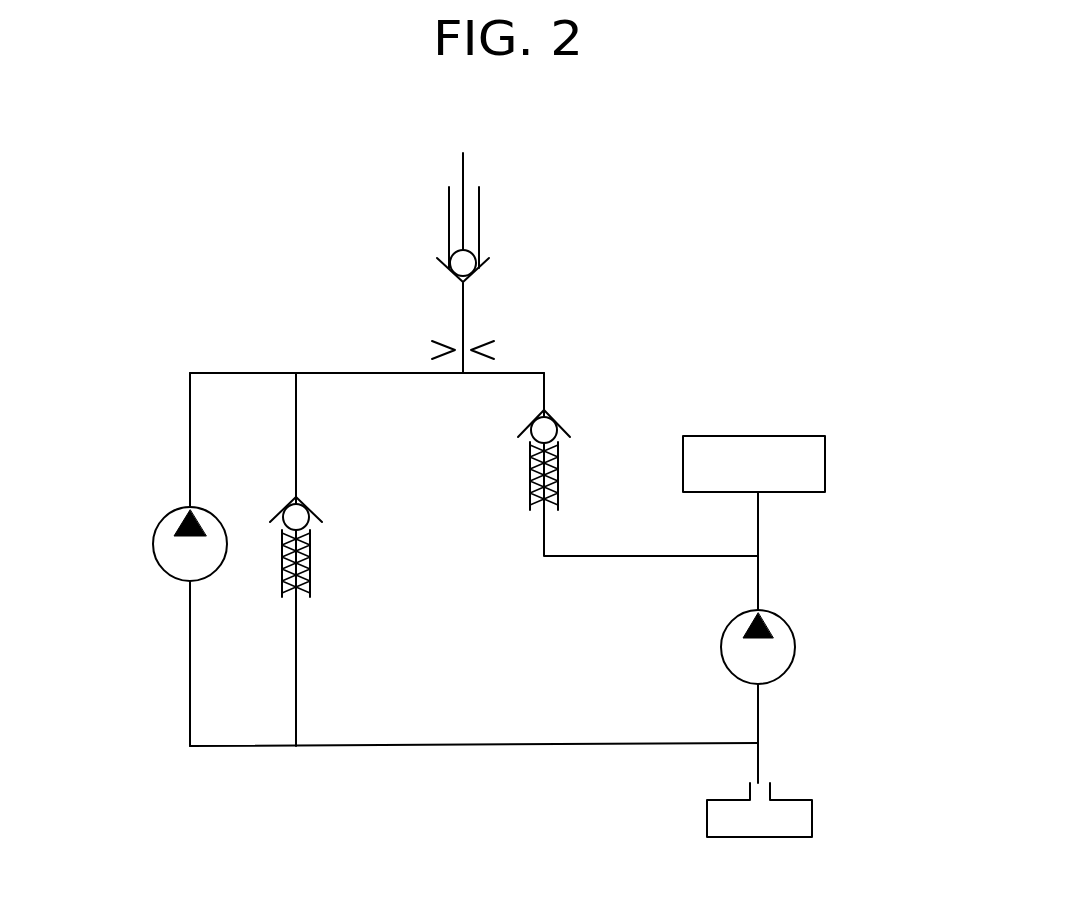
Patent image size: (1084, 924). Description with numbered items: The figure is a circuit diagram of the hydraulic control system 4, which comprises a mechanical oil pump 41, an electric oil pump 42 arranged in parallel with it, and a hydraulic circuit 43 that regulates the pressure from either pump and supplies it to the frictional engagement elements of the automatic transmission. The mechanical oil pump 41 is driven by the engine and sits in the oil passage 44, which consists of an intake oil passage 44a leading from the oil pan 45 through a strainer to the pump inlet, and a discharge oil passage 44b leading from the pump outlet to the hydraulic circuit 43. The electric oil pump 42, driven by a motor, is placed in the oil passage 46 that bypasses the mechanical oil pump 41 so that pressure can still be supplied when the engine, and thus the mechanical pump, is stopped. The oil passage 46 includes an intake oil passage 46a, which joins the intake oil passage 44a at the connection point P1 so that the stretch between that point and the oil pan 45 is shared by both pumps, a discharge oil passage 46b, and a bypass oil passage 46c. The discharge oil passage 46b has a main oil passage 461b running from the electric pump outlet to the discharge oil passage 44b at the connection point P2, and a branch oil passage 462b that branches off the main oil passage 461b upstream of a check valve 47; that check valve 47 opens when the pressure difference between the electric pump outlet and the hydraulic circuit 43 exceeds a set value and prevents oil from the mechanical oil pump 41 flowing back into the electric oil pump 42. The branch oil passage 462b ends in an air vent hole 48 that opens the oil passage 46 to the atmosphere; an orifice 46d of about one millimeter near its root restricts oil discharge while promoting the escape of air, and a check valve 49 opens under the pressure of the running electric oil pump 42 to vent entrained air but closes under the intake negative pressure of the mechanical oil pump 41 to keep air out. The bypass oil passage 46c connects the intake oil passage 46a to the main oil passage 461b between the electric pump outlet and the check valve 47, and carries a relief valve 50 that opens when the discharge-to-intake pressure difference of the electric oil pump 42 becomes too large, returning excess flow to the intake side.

The hydraulic control system 4 is at (660, 327).
The mechanical oil pump 41 is at (796, 640).
The electric oil pump 42 is at (160, 517).
The hydraulic circuit 43 is at (796, 435).
The oil passage 44 is at (814, 637).
The intake oil passage 44a is at (760, 705).
The discharge oil passage 44b is at (760, 514).
The oil pan 45 is at (813, 813).
The oil passage 46 is at (436, 757).
The intake oil passage 46a is at (532, 748).
The discharge oil passage 46b is at (367, 316).
The main oil passage 461b is at (366, 372).
The branch oil passage 462b is at (462, 306).
The bypass oil passage 46c is at (297, 435).
The orifice 46d is at (485, 343).
The check valve 47 is at (560, 468).
The air vent hole 48 is at (463, 153).
The check valve 49 is at (480, 215).
The relief valve 50 is at (311, 560).
The connection point P1 is at (752, 738).
The connection point P2 is at (752, 560).